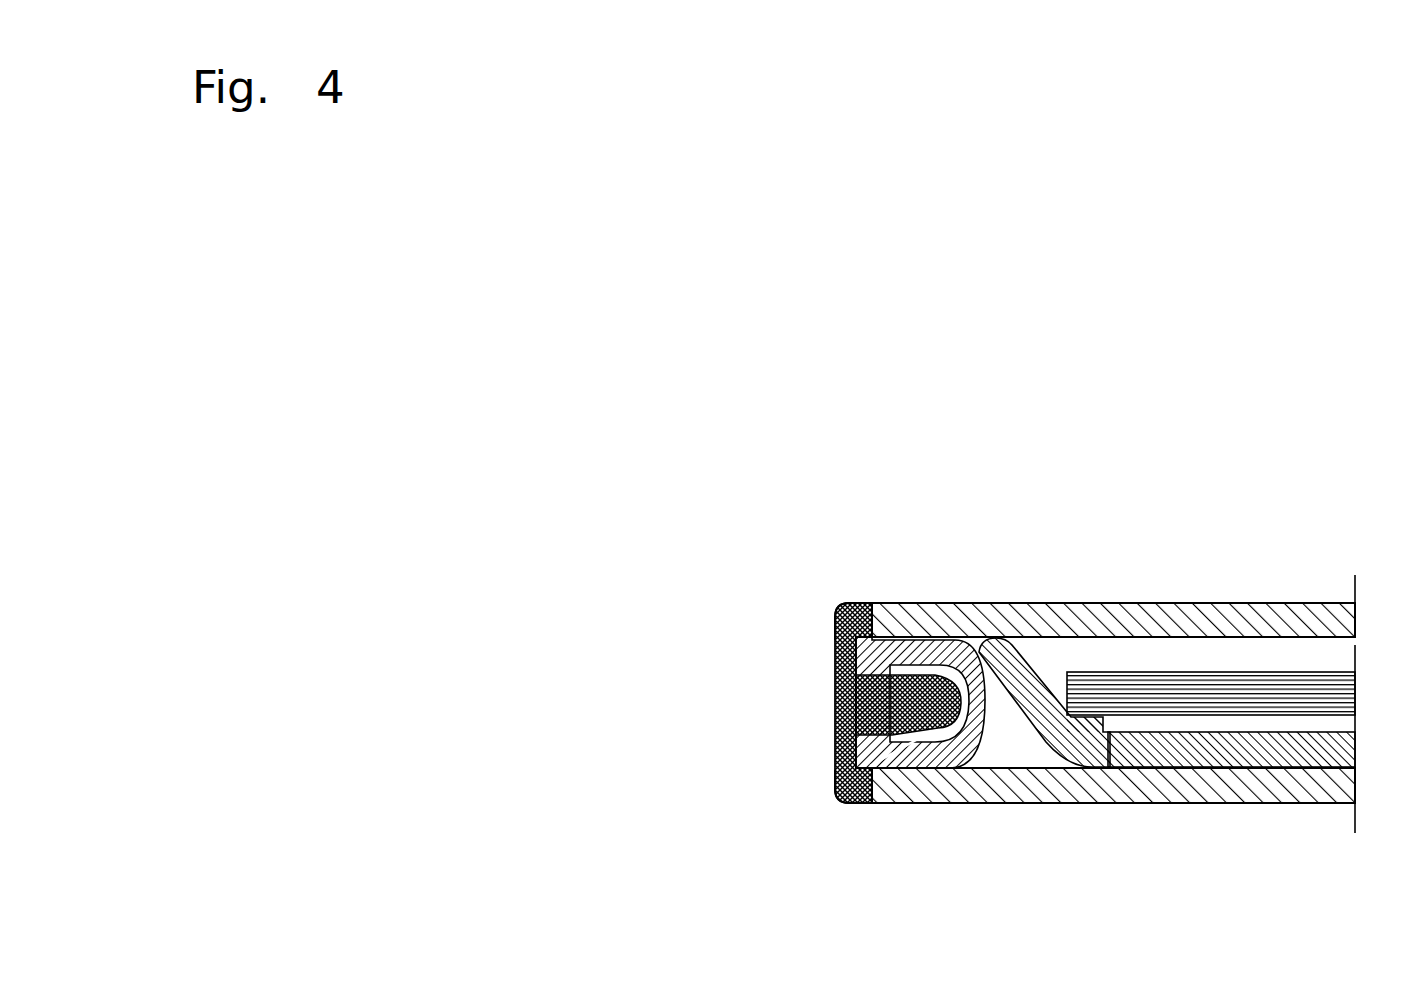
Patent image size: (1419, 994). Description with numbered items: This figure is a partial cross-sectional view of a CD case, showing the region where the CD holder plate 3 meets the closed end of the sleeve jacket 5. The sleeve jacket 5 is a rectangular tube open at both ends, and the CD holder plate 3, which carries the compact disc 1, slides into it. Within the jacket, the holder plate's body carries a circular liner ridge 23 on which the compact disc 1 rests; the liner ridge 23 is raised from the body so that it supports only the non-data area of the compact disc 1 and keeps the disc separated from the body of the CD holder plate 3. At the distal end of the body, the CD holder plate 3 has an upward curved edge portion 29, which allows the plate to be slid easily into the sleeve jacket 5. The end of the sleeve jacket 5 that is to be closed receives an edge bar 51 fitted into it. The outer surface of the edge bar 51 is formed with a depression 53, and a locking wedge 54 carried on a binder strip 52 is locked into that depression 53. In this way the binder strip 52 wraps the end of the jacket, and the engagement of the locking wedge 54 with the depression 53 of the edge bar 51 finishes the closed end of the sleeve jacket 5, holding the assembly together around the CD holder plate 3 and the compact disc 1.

The compact disc 1 is at (1197, 682).
The CD holder plate 3 is at (1275, 758).
The sleeve jacket 5 is at (997, 605).
The liner ridge 23 is at (1103, 718).
The upward curved edge portion 29 is at (1022, 655).
The edge bar 51 is at (945, 645).
The binder strip 52 is at (838, 748).
The depression 53 is at (840, 788).
The locking wedge 54 is at (853, 606).